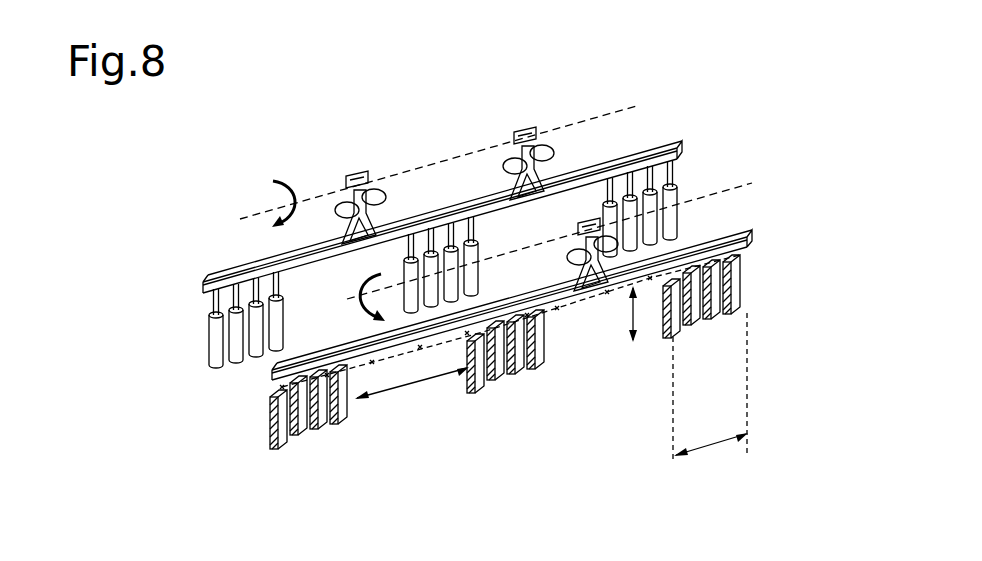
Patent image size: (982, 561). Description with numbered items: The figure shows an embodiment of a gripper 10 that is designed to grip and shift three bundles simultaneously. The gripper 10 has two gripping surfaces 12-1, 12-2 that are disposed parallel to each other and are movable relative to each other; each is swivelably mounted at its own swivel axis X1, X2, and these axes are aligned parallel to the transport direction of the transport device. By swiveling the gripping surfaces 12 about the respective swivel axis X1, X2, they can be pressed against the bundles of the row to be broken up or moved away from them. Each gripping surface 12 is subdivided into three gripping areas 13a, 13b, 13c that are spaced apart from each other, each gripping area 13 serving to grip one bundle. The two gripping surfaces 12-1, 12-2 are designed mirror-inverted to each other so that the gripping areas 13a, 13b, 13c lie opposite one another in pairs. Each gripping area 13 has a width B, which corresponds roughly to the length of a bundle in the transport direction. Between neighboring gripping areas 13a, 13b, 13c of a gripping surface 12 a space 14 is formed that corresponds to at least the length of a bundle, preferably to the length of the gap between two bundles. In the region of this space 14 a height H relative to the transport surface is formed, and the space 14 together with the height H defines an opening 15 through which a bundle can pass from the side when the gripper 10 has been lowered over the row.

The gripper 10 is at (558, 503).
The gripping surfaces 12 is at (539, 233).
The first gripping surface 12-1 is at (677, 160).
The second gripping surface 12-2 is at (746, 248).
The gripping area 13 is at (480, 274).
The first gripping area 13a is at (218, 340).
The second gripping area 13b is at (459, 250).
The third gripping area 13c is at (650, 200).
The space 14 is at (412, 380).
The opening 15 is at (605, 348).
The height H is at (625, 314).
The width B is at (710, 387).
The first swivel axis X1 is at (420, 170).
The second swivel axis X2 is at (531, 252).